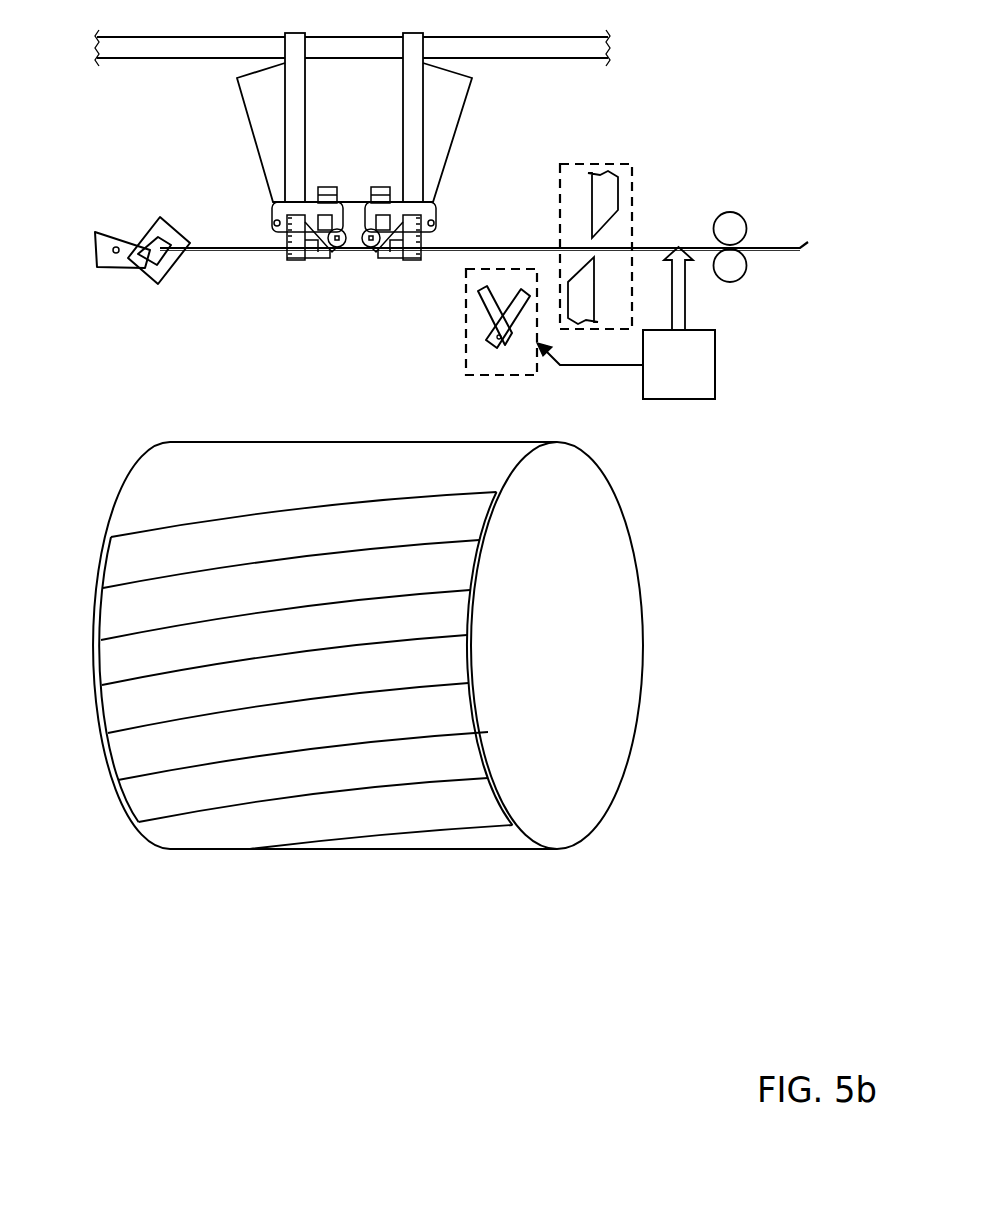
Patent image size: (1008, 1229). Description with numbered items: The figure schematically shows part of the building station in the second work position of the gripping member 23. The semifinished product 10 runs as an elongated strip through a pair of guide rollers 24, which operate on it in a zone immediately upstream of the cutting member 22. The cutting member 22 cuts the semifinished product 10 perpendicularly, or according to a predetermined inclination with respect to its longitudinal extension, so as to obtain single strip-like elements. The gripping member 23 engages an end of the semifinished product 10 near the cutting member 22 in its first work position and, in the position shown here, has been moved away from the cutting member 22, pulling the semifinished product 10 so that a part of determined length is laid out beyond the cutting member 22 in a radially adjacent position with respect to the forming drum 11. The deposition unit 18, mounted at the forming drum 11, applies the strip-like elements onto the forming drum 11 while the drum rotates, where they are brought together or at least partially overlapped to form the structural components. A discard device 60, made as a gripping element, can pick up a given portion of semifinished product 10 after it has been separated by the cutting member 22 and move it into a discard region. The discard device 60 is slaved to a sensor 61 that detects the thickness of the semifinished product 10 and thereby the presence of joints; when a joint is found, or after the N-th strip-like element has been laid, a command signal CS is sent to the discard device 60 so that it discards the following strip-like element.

The semifinished product 10 is at (772, 248).
The forming drum 11 is at (608, 625).
The deposition unit 18 is at (226, 146).
The cutting member 22 is at (622, 163).
The gripping member 23 is at (133, 272).
The pair of guide rollers 24 is at (738, 211).
The discard device 60 is at (502, 378).
The sensor 61 is at (662, 380).
The command signal CS is at (467, 342).